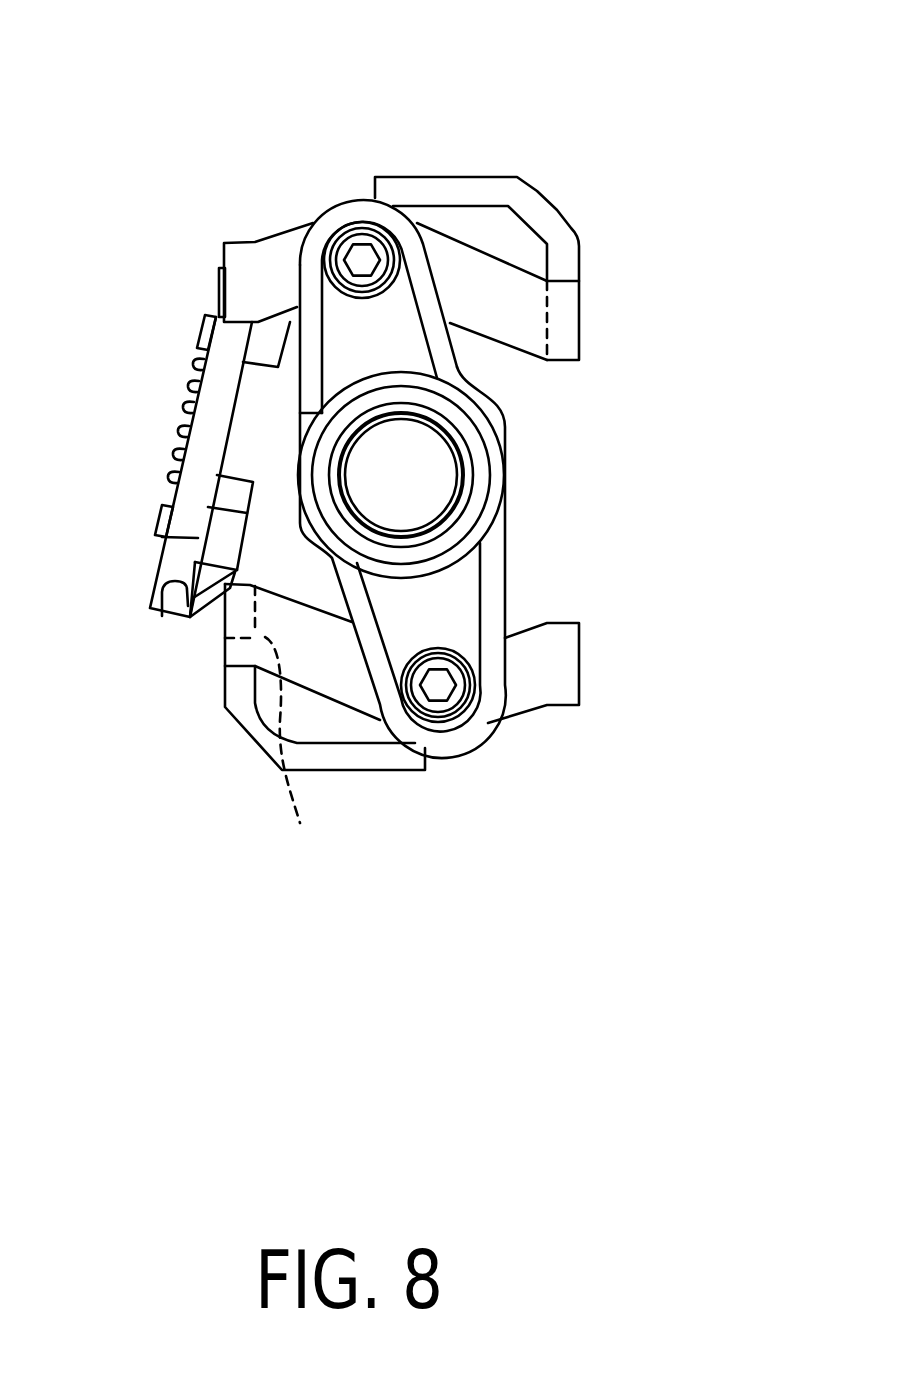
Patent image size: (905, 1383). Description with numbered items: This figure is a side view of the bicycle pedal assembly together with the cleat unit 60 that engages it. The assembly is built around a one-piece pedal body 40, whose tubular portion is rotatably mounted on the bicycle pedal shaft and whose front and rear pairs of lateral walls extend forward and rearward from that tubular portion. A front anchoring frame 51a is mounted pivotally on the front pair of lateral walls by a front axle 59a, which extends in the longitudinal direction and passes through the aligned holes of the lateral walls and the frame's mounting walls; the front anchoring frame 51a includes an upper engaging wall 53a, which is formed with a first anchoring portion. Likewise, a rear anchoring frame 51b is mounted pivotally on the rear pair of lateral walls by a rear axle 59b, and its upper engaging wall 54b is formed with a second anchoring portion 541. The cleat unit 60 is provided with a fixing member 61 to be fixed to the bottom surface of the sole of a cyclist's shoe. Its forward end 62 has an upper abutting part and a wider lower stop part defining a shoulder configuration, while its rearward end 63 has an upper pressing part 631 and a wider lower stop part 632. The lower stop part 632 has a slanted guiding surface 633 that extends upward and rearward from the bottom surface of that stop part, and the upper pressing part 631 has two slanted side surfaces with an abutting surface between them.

The one-piece pedal body 40 is at (529, 466).
The front anchoring frame 51a is at (290, 228).
The rear anchoring frame 51b is at (510, 713).
The upper engaging wall 53a is at (237, 240).
The upper engaging wall 54b is at (212, 600).
The second anchoring portion 541 is at (300, 761).
The front axle 59a is at (363, 258).
The rear axle 59b is at (433, 692).
The cleat unit 60 is at (160, 372).
The fixing member 61 is at (205, 372).
The forward end 62 is at (220, 293).
The rearward end 63 is at (160, 570).
The upper pressing part 631 is at (157, 590).
The lower stop part 632 is at (160, 617).
The slanted guiding surface 633 is at (210, 608).